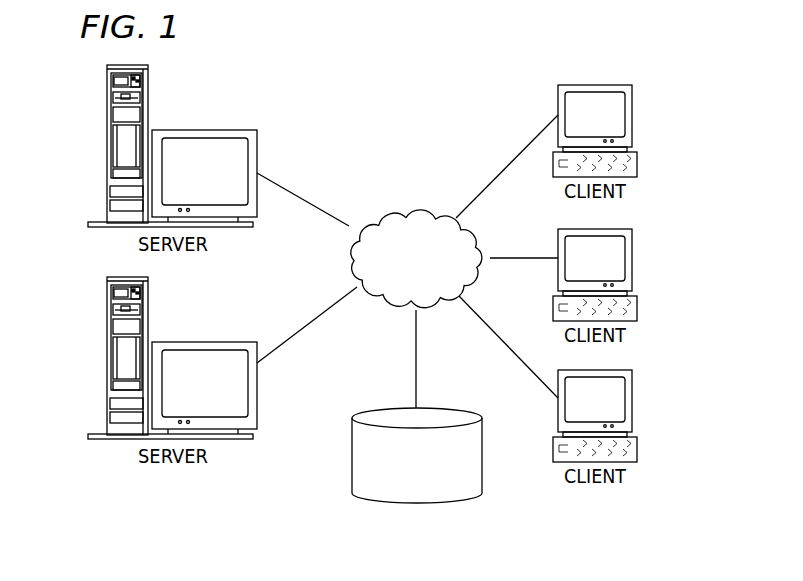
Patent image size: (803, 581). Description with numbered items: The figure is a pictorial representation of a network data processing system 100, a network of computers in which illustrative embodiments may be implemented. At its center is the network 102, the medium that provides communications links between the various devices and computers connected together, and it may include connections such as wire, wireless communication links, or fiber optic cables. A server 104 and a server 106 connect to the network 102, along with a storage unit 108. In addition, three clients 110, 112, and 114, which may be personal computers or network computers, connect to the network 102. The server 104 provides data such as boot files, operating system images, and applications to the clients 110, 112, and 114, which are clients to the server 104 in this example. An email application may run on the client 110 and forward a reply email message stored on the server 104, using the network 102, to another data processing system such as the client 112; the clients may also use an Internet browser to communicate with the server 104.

The network data processing system 100 is at (470, 92).
The network 102 is at (387, 210).
The server 104 is at (105, 146).
The server 106 is at (106, 360).
The storage unit 108 is at (398, 503).
The client 110 is at (632, 115).
The client 112 is at (632, 259).
The client 114 is at (632, 402).